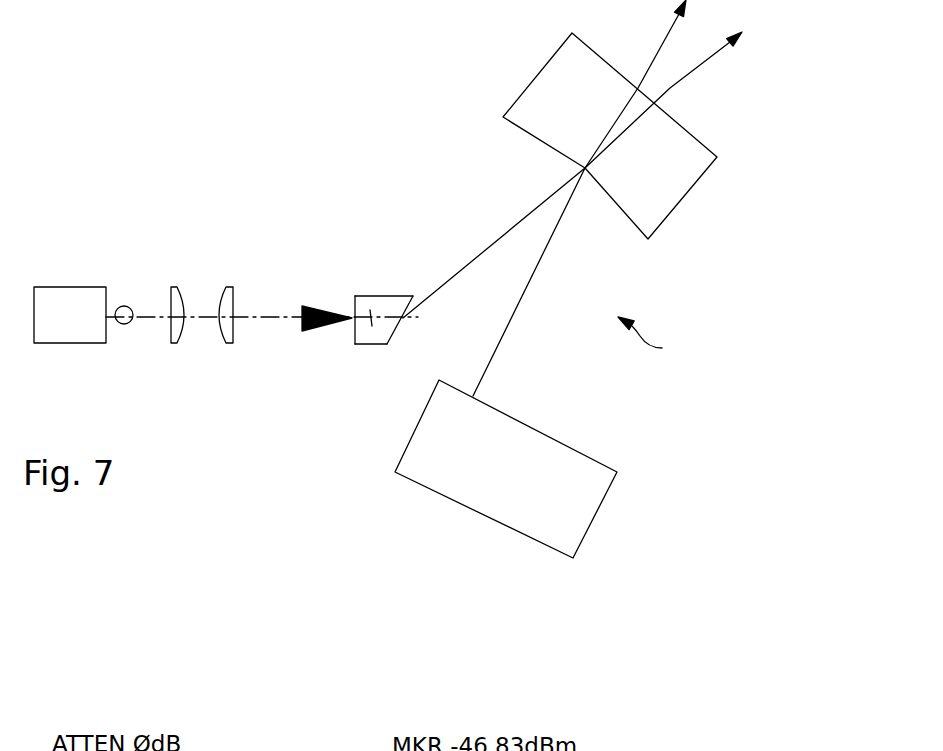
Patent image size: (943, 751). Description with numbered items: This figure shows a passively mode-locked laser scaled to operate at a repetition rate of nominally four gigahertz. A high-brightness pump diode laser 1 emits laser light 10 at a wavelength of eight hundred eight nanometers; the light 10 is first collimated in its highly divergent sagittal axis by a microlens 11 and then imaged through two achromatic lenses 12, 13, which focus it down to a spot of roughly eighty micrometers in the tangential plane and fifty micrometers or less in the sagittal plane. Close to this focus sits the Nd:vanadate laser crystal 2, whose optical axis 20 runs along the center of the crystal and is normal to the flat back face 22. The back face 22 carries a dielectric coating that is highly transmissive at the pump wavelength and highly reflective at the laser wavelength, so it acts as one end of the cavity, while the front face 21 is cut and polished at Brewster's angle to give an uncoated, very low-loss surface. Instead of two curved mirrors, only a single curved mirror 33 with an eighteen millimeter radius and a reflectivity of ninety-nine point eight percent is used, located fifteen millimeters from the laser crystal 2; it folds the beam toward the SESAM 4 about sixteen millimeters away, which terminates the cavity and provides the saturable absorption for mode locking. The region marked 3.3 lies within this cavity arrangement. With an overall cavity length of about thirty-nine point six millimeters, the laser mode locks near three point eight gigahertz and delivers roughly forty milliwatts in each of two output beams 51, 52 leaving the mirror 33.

The diode laser 1 is at (65, 298).
The laser light 10 is at (147, 318).
The microlens 11 is at (125, 325).
The achromatic lens 12 is at (176, 300).
The achromatic lens 13 is at (225, 337).
The laser crystal 2 is at (381, 315).
The optical axis 20 is at (372, 320).
The front face 21 is at (398, 333).
The back face 22 is at (352, 336).
The curved mirror 33 is at (530, 105).
The SESAM 4 is at (576, 470).
The beam 51 is at (657, 50).
The beam 52 is at (697, 68).
The observation direction 3.3 is at (665, 341).